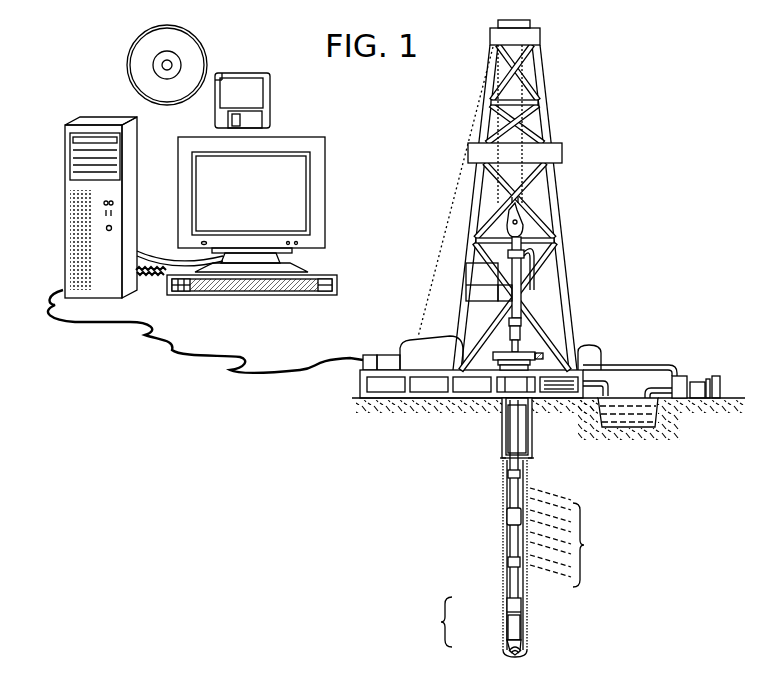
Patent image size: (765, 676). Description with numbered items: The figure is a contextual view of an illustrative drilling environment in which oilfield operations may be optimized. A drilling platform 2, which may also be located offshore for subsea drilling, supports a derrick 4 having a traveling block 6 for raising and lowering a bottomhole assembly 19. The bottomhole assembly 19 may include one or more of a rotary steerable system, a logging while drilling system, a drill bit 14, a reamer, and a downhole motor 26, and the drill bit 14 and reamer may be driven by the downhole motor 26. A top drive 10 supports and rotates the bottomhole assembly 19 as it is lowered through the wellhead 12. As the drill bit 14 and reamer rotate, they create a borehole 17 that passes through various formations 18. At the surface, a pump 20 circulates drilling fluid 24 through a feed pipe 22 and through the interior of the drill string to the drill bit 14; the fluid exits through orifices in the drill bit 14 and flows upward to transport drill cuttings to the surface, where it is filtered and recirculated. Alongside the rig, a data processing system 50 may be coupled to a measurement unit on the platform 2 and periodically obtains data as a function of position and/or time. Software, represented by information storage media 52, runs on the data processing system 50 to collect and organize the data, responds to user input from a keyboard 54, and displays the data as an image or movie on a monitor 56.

The drilling platform 2 is at (360, 378).
The derrick 4 is at (547, 125).
The traveling block 6 is at (528, 212).
The top drive 10 is at (516, 272).
The wellhead 12 is at (545, 337).
The drill bit 14 is at (522, 648).
The borehole 17 is at (503, 512).
The formations 18 is at (572, 537).
The bottomhole assembly 19 is at (464, 622).
The pump 20 is at (686, 376).
The feed pipe 22 is at (640, 366).
The drilling fluid 24 is at (605, 425).
The downhole motor 26 is at (512, 622).
The data processing system 50 is at (137, 226).
The information storage media 52 is at (231, 73).
The keyboard 54 is at (318, 296).
The monitor 56 is at (316, 249).